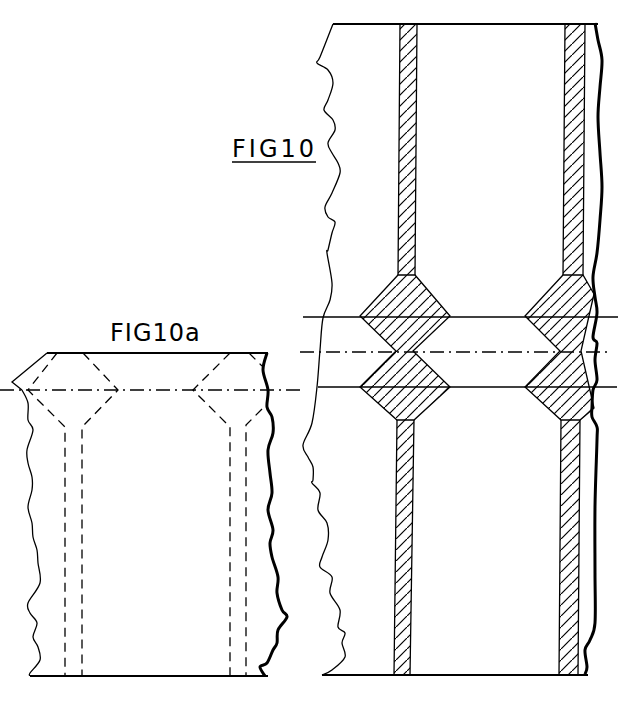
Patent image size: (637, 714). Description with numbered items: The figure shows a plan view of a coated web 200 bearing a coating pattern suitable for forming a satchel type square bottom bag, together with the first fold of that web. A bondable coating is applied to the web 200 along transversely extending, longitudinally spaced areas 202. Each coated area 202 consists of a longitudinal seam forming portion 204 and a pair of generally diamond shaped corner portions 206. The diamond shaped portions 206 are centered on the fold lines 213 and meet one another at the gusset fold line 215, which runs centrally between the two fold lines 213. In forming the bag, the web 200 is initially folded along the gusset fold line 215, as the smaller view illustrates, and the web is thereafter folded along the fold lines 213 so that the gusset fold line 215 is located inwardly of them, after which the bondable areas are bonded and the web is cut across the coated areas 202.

In FIG. 10, the web 200 is at (338, 262).
In FIG. 10, the transversely extending longitudinally spaced area 202 is at (565, 197).
In FIG. 10, the longitudinal seam forming portion 204 is at (565, 140).
In FIG. 10, the diamond shaped corner portion 206 is at (547, 295).
In FIG. 10, the fold line 213 is at (467, 318).
In FIG. 10, the gusset fold line 215 is at (467, 353).
In FIG. 10a, the gusset fold line 215 is at (128, 354).